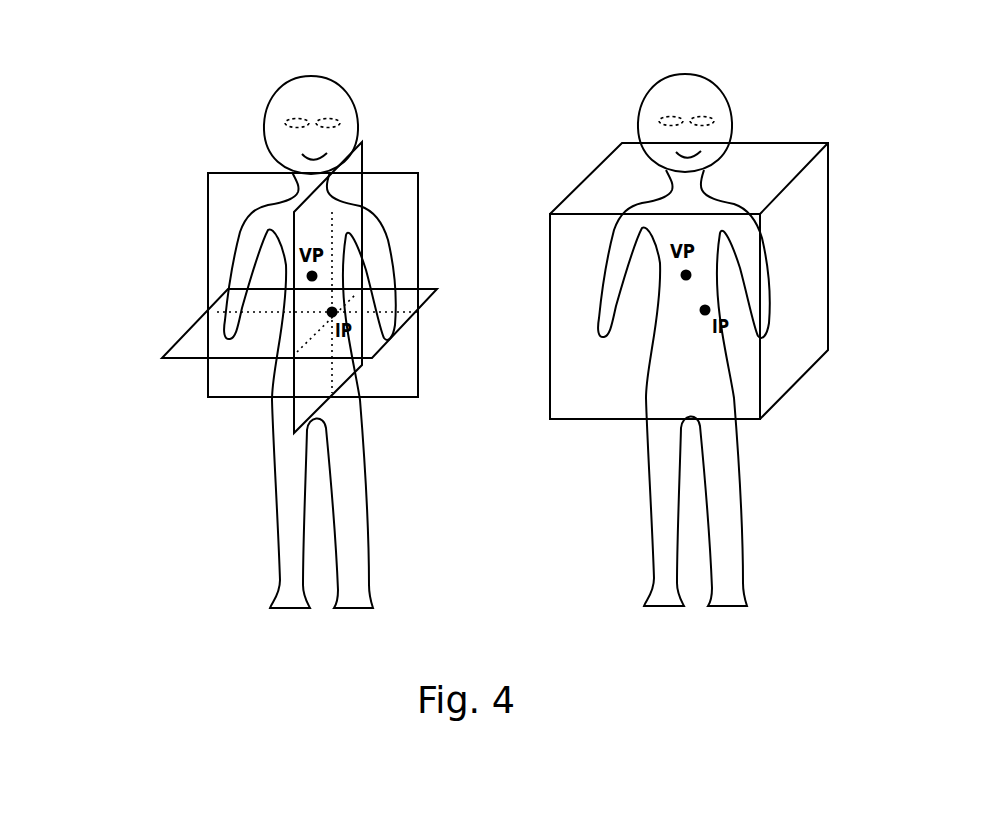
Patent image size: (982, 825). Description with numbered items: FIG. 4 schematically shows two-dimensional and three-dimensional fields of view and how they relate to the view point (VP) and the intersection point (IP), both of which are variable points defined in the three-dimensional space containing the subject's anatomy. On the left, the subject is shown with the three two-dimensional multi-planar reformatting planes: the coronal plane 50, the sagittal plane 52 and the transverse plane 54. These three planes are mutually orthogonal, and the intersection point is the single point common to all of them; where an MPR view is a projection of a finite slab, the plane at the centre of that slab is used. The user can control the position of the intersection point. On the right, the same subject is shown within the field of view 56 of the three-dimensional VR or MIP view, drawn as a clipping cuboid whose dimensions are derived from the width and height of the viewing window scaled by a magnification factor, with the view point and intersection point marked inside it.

The coronal MPR plane 50 is at (418, 196).
The sagittal MPR plane 52 is at (292, 405).
The transverse MPR plane 54 is at (187, 360).
The field of view of the three-dimensional VR or MIP view 56 is at (588, 175).